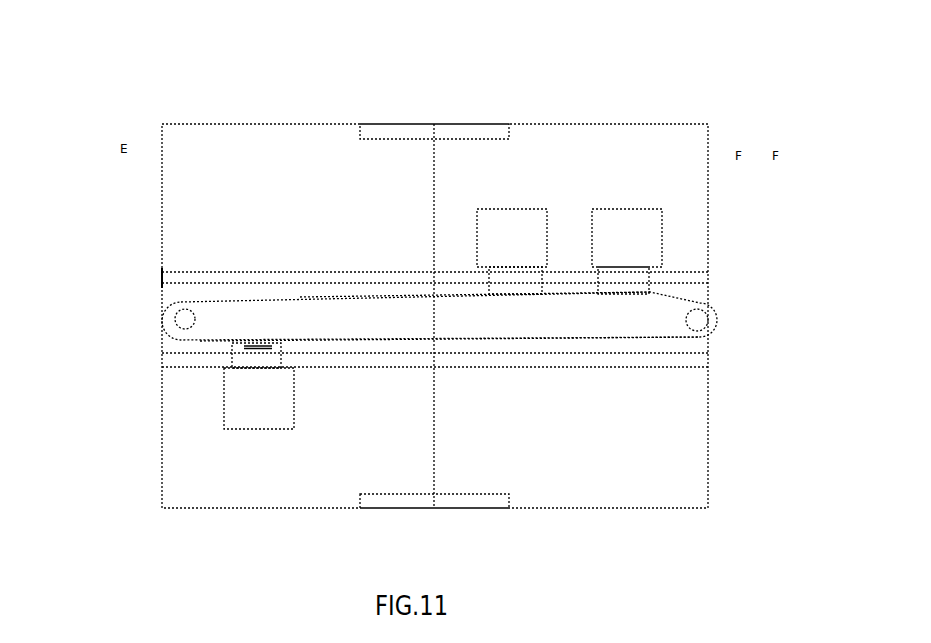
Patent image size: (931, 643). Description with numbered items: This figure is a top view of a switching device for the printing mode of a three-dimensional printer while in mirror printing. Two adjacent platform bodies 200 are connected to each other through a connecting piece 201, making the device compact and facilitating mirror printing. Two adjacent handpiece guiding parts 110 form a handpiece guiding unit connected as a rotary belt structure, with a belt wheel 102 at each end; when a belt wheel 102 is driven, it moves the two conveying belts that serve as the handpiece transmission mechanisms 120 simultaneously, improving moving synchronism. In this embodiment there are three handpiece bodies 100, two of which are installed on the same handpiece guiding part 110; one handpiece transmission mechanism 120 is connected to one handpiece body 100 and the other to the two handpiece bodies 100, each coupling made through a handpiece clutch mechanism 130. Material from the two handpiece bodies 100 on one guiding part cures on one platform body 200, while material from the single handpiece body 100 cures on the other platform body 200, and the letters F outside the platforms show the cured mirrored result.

The platform body 200 is at (273, 162).
The connecting piece 201 is at (433, 127).
The handpiece body 100 is at (532, 232).
The handpiece clutch mechanism 130 is at (520, 280).
The belt wheel 102 is at (168, 305).
The handpiece guiding part 110 is at (352, 277).
The handpiece transmission mechanism 120 is at (567, 295).